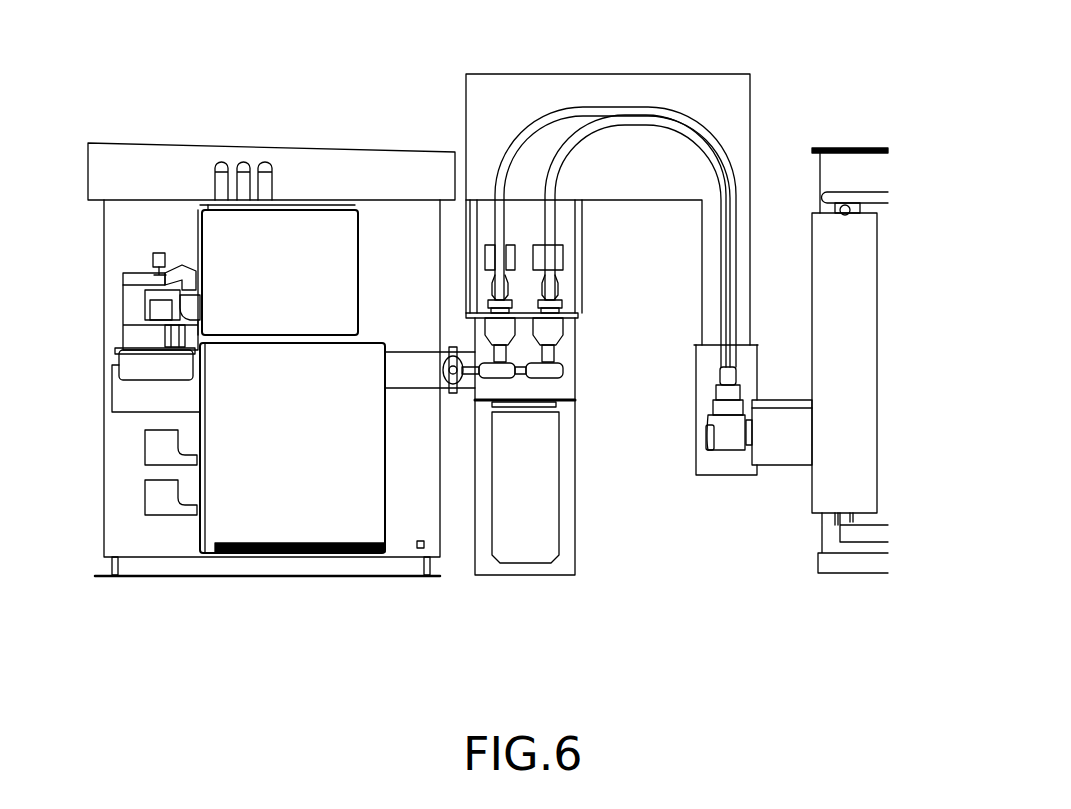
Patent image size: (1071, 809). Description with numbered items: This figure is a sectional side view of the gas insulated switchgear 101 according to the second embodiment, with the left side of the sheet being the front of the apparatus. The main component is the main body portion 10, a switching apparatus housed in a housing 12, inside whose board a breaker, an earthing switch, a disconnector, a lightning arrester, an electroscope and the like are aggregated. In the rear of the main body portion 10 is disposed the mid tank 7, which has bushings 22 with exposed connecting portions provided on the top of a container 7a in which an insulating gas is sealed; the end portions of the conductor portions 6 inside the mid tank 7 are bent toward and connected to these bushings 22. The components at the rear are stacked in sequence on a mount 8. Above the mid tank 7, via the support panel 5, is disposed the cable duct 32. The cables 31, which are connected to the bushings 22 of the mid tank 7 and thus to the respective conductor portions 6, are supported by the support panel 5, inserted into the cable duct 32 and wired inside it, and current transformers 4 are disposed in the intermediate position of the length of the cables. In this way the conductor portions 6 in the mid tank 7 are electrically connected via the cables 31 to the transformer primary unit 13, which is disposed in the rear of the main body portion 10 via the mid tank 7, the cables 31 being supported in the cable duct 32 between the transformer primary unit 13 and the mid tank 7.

The current transformer 4 is at (555, 258).
The support panel 5 is at (582, 287).
The conductor portion 6 is at (555, 370).
The mid tank 7 is at (577, 383).
The container 7a is at (570, 412).
The mount 8 is at (578, 480).
The main body portion 10 is at (220, 425).
The housing 12 is at (104, 512).
The transformer primary unit 13 is at (812, 490).
The bushing 22 is at (553, 335).
The cable 31 is at (698, 127).
The cable duct 32 is at (466, 102).
The gas insulated switchgear 101 is at (872, 596).